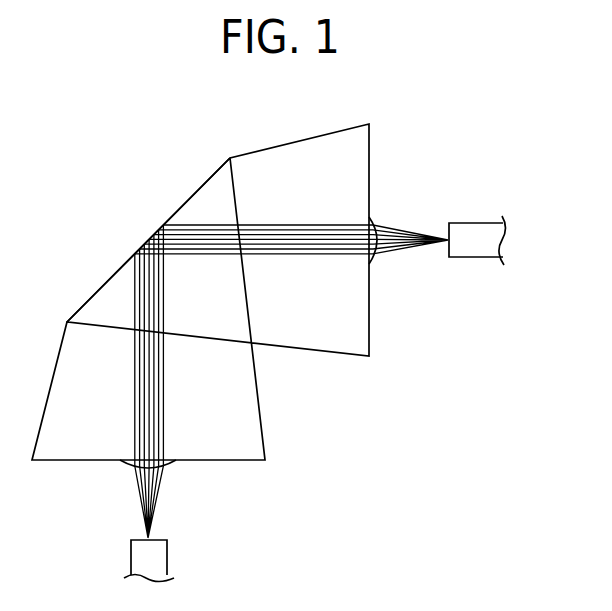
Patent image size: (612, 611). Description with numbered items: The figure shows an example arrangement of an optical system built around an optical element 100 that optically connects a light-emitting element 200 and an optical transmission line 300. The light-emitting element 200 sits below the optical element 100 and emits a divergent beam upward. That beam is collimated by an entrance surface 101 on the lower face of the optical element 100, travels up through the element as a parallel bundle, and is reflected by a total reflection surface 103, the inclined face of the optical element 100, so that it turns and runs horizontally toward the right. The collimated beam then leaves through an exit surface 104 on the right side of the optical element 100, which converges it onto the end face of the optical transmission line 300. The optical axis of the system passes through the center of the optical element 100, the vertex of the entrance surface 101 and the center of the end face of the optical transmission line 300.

The optical element 100 is at (287, 157).
The entrance surface 101 is at (173, 465).
The total reflection surface 103 is at (138, 240).
The exit surface 104 is at (373, 262).
The light-emitting element 200 is at (168, 550).
The optical transmission line 300 is at (480, 222).